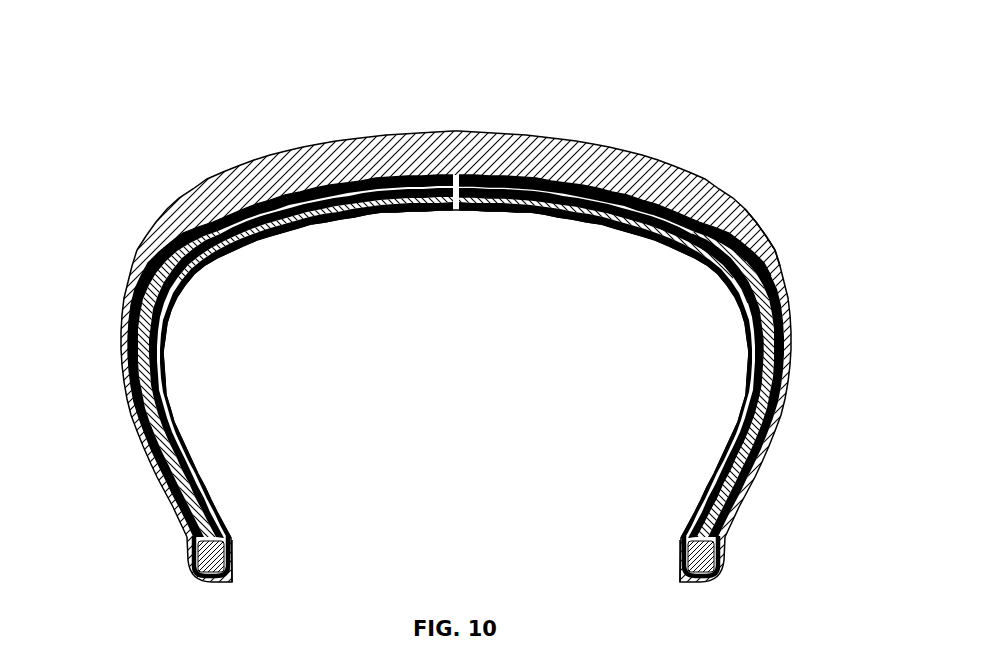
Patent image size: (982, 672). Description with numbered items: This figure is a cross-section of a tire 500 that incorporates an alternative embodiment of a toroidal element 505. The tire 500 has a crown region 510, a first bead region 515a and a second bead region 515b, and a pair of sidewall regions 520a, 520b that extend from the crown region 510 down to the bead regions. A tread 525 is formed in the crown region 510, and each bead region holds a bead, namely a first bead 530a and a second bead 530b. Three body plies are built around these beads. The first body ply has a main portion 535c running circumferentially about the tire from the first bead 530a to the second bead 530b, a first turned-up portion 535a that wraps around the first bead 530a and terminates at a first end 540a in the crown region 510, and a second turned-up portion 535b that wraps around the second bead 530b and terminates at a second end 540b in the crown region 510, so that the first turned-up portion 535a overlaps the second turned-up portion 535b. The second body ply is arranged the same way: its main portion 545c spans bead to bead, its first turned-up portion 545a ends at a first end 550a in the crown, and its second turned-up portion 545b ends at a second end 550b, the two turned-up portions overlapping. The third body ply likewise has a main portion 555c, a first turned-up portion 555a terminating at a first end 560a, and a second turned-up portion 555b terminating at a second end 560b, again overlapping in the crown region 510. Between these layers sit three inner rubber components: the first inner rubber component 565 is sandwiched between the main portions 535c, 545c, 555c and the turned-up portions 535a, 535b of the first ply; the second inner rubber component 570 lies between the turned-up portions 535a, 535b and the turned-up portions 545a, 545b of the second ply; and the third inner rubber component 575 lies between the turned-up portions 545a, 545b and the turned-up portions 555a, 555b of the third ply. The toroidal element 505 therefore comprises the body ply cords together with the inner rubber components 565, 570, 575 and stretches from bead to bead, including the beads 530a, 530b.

The tire 500 is at (159, 53).
The toroidal element 505 is at (756, 246).
The crown region 510 is at (798, 155).
The first bead region 515a is at (798, 528).
The second bead region 515b is at (115, 528).
The sidewall region 520a is at (798, 240).
The sidewall region 520b is at (115, 240).
The tread 525 is at (497, 129).
The first bead 530a is at (715, 578).
The second bead 530b is at (197, 578).
The first turned-up portion of first body ply 535a is at (612, 229).
The second turned-up portion of first body ply 535b is at (300, 228).
The main portion of first body ply 535c is at (251, 241).
The first end 540a is at (341, 211).
The second end 540b is at (582, 203).
The first turned-up portion of second body ply 545a is at (618, 186).
The second turned-up portion of second body ply 545b is at (287, 184).
The main portion of second body ply 545c is at (198, 264).
The first end 550a is at (336, 186).
The second end 550b is at (575, 186).
The first turned-up portion of third body ply 555a is at (656, 181).
The second turned-up portion of third body ply 555b is at (223, 210).
The main portion of third body ply 555c is at (454, 199).
The first end 560a is at (310, 188).
The second end 560b is at (597, 190).
The first inner rubber component 565 is at (720, 268).
The second inner rubber component 570 is at (699, 196).
The third inner rubber component 575 is at (726, 226).